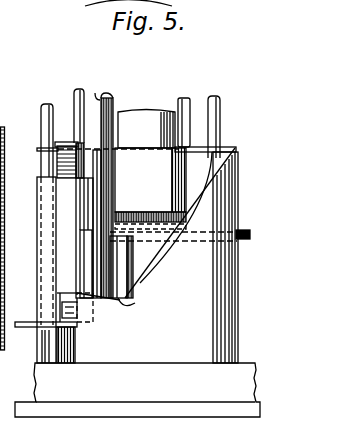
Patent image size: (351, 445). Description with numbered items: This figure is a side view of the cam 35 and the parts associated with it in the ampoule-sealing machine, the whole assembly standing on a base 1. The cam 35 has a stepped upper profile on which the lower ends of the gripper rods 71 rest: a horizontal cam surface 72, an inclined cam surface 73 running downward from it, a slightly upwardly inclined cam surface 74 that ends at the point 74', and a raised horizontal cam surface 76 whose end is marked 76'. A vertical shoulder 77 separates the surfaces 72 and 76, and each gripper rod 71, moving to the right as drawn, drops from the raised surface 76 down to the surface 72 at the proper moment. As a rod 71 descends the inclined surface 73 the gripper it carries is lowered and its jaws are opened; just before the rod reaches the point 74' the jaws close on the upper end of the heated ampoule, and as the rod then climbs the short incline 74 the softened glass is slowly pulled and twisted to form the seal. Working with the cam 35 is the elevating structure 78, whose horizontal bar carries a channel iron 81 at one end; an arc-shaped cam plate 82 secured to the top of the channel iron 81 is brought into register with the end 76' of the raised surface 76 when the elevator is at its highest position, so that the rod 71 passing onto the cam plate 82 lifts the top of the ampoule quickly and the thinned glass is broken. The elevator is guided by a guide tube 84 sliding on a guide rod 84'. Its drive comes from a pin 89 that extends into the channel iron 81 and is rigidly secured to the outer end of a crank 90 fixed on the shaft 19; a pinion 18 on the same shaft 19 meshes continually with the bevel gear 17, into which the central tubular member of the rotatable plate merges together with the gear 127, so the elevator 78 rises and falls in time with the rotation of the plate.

The base 1 is at (219, 383).
The bevel gear 17 is at (137, 233).
The pinion 18 is at (108, 248).
The shaft 19 is at (243, 231).
The cam 35 is at (226, 297).
The gripper rods 71 is at (86, 93).
The horizontal cam surface 72 is at (197, 143).
The inclined cam surface 73 is at (218, 178).
The slightly upwardly inclined cam surface 74 is at (98, 309).
The point of cam surface 74' is at (136, 308).
The raised horizontal cam surface 76 is at (66, 149).
The end of raised cam surface 76' is at (37, 151).
The vertical shoulder 77 is at (102, 142).
The elevating structure 78 is at (30, 328).
The channel iron 81 is at (62, 300).
The arc-shaped cam plate 82 is at (67, 294).
The guide tube 84 is at (35, 270).
The guide rod 84' is at (35, 140).
The pin 89 is at (80, 323).
The crank 90 is at (85, 263).
The gear 127 is at (139, 218).